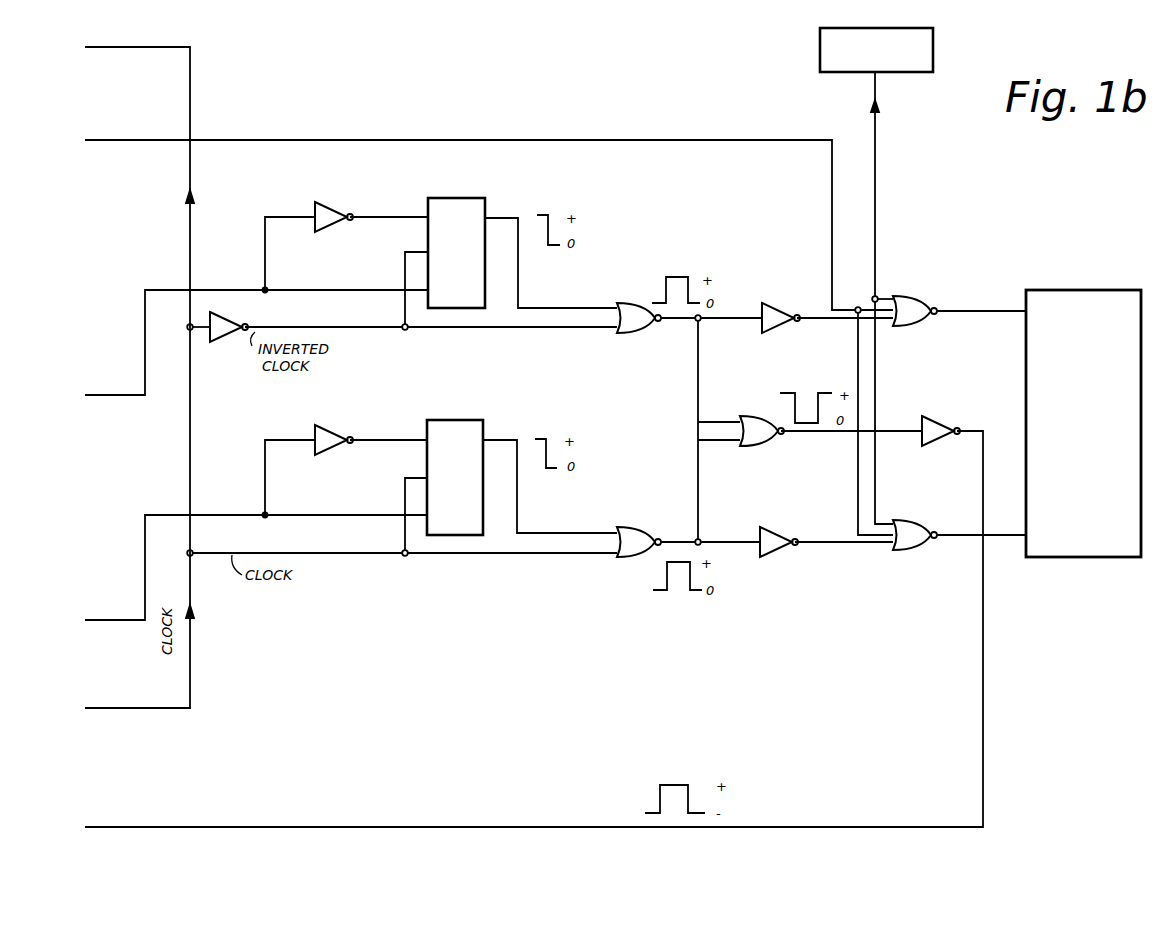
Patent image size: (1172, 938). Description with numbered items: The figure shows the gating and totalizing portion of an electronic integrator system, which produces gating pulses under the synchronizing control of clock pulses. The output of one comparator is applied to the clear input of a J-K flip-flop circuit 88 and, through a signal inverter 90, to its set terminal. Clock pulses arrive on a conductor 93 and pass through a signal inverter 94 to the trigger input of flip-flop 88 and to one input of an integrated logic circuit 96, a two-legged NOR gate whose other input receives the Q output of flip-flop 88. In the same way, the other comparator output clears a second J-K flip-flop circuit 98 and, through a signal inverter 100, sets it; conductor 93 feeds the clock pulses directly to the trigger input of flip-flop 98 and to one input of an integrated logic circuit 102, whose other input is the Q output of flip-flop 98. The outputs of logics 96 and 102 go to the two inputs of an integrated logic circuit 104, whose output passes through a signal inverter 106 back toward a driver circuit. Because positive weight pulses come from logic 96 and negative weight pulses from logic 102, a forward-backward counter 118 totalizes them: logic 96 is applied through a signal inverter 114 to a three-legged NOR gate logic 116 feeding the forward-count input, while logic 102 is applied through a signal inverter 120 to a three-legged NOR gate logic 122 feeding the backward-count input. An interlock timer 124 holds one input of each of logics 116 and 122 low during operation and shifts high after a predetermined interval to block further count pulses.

The J-K flip-flop circuit 88 is at (459, 198).
The signal inverter 90 is at (343, 212).
The conductor 93 is at (158, 50).
The signal inverter 94 is at (237, 322).
The integrated logic circuit 96 is at (641, 304).
The J-K flip-flop circuit 98 is at (456, 420).
The signal inverter 100 is at (343, 436).
The integrated logic circuit 102 is at (638, 530).
The integrated logic circuit 104 is at (754, 420).
The signal inverter 106 is at (945, 424).
The signal inverter 114 is at (781, 308).
The logic 116 is at (919, 301).
The counter 118 is at (1110, 290).
The signal inverter 120 is at (780, 531).
The logic 122 is at (919, 531).
The interlock timer 124 is at (820, 45).